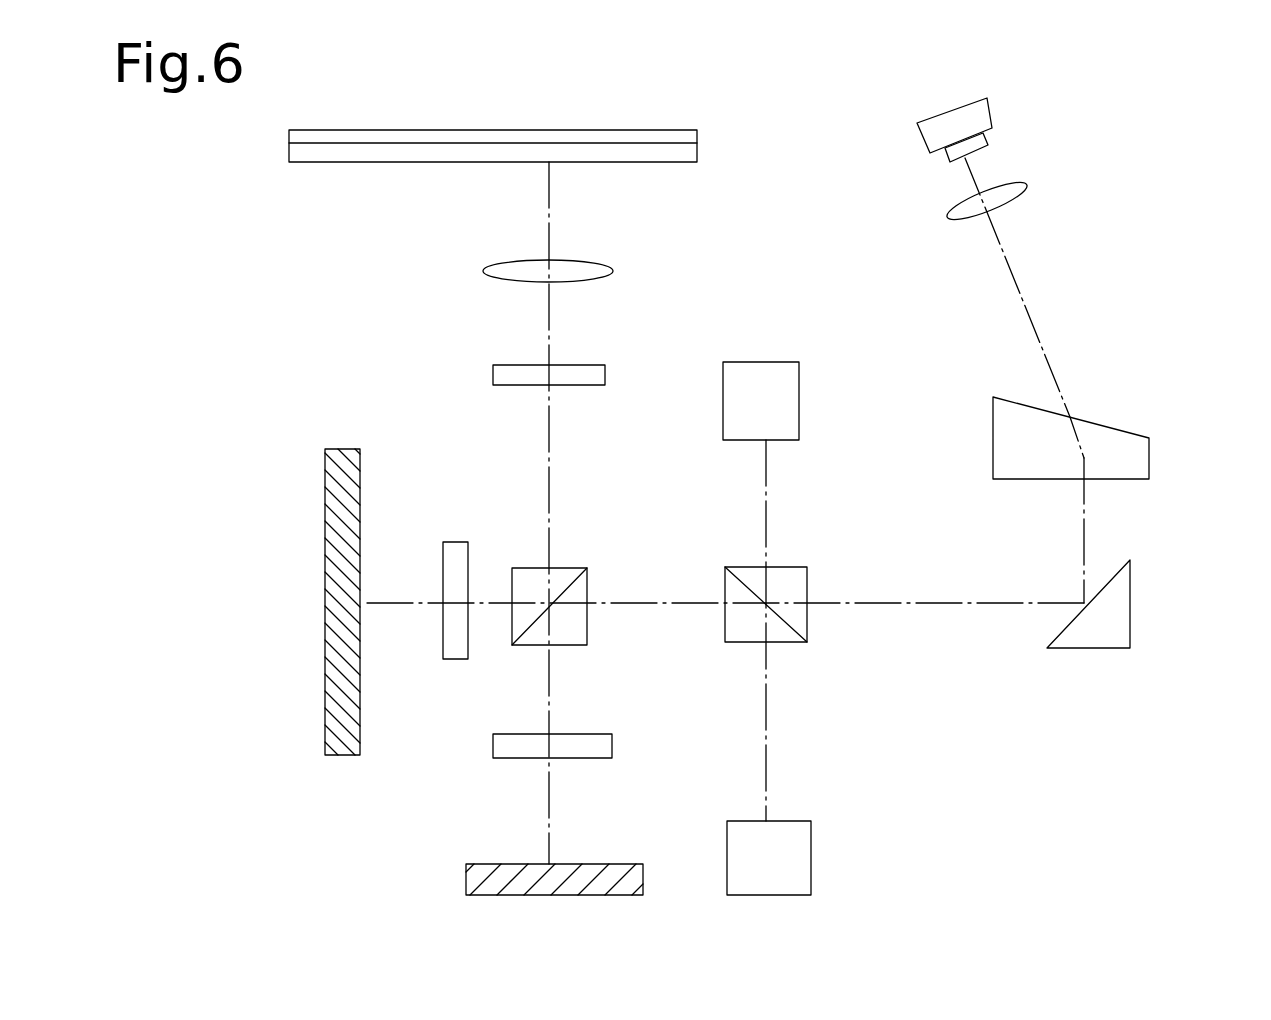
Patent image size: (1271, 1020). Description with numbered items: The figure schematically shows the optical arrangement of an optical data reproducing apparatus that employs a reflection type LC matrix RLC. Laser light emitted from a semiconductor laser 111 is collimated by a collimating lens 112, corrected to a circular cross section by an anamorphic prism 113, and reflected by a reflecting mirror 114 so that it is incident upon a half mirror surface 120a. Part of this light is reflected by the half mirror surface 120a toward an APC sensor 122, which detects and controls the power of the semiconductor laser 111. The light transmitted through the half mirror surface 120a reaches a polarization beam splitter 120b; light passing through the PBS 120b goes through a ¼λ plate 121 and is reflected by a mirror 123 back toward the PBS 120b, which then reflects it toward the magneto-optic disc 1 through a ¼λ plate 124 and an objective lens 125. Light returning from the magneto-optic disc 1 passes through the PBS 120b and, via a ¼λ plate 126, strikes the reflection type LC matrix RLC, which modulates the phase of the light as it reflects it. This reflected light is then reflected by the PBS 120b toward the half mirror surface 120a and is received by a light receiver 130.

The magneto-optic disc 1 is at (606, 146).
The semiconductor laser 111 is at (980, 122).
The collimating lens 112 is at (1012, 194).
The anamorphic prism 113 is at (1136, 456).
The reflecting mirror 114 is at (1110, 625).
The half mirror surface 120a is at (787, 618).
The polarization beam splitter 120b is at (565, 585).
The ¼λ plate 121 is at (462, 552).
The APC sensor 122 is at (773, 380).
The mirror 123 is at (340, 488).
The ¼λ plate 124 is at (593, 375).
The objective lens 125 is at (585, 266).
The ¼λ plate 126 is at (605, 742).
The light receiver 130 is at (798, 856).
The reflection type LC matrix RLC is at (478, 880).